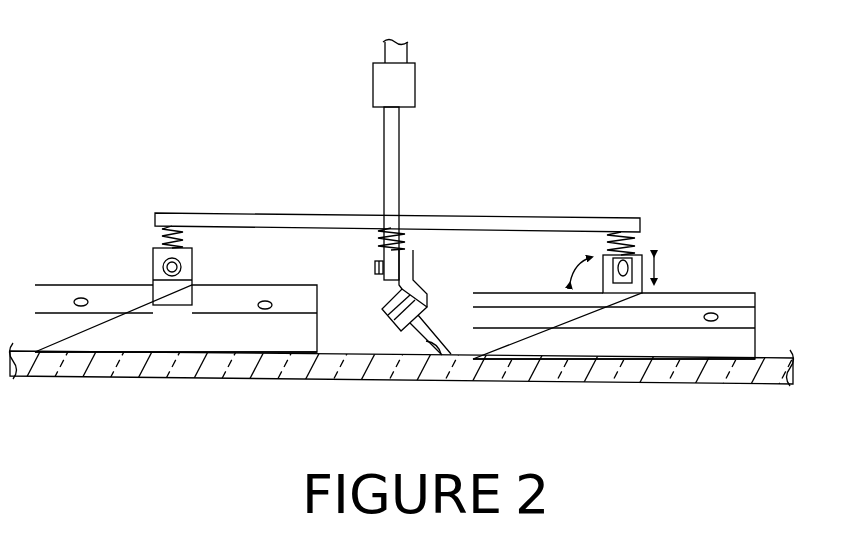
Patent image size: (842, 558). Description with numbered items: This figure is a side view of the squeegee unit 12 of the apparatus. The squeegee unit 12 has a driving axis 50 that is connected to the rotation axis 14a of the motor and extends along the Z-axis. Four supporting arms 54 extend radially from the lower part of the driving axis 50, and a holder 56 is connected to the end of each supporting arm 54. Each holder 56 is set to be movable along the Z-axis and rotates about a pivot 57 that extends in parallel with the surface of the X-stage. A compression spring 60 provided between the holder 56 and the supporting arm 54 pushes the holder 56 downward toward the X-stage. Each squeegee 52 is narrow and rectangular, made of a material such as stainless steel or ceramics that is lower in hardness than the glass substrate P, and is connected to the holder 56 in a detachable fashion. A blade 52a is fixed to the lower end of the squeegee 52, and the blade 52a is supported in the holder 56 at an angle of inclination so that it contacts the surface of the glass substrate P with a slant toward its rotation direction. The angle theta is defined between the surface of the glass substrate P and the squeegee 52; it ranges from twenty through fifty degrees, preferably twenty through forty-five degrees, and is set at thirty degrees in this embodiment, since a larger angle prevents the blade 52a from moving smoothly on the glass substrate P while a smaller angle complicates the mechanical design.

The squeegee unit 12 is at (212, 166).
The rotation axis 14a is at (407, 50).
The driving axis 50 is at (400, 132).
The squeegee 52 is at (137, 340).
The blade 52a is at (207, 340).
The supporting arm 54 is at (263, 213).
The holder 56 is at (425, 297).
The pivot 57 is at (163, 266).
The compression spring 60 is at (162, 238).
The glass substrate P is at (331, 380).